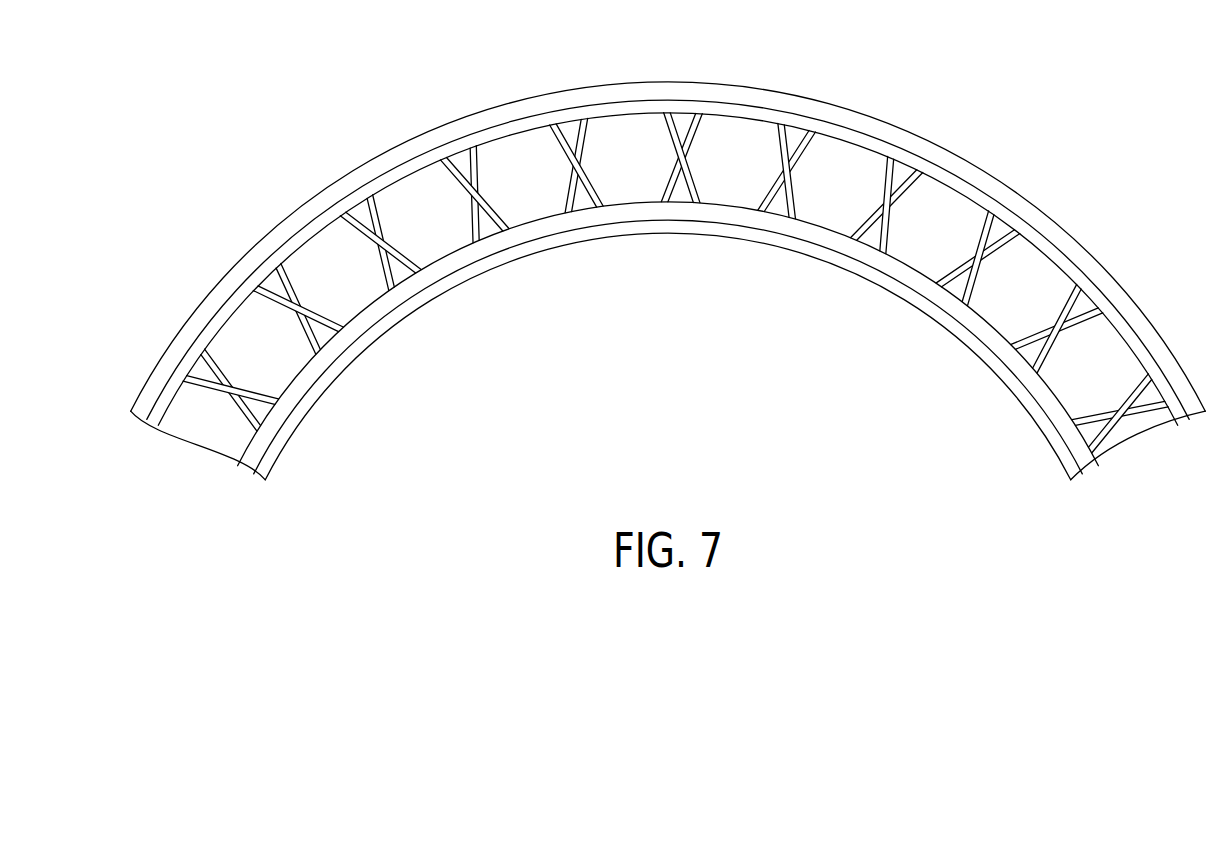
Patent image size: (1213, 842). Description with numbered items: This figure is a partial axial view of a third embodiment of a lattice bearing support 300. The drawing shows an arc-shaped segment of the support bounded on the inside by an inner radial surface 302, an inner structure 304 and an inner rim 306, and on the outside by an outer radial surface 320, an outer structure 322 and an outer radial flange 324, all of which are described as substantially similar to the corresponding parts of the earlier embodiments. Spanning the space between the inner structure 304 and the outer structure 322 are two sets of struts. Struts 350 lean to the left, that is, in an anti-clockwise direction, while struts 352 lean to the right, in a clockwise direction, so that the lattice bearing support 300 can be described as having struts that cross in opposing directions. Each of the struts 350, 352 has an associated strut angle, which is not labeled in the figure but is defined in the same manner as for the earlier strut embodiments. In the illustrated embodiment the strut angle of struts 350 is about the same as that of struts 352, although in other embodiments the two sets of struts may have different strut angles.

The lattice bearing support 300 is at (1086, 166).
The inner radial surface 302 is at (993, 352).
The inner structure 304 is at (1008, 353).
The inner rim 306 is at (955, 328).
The outer radial surface 320 is at (837, 127).
The outer structure 322 is at (878, 148).
The outer radial flange 324 is at (793, 97).
The struts 350 is at (442, 171).
The struts 352 is at (474, 158).